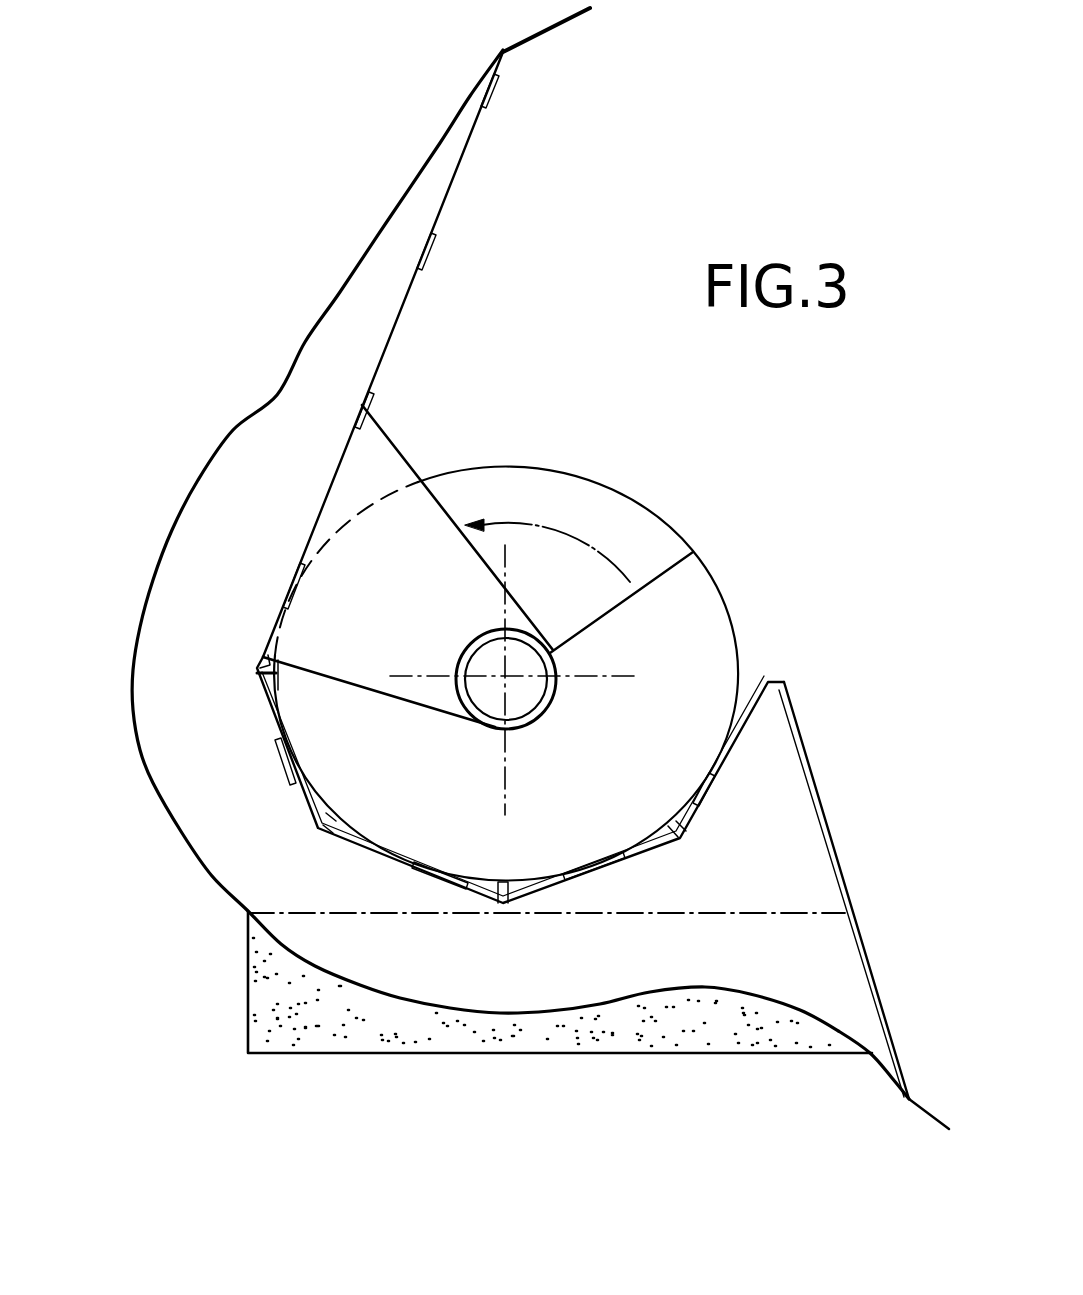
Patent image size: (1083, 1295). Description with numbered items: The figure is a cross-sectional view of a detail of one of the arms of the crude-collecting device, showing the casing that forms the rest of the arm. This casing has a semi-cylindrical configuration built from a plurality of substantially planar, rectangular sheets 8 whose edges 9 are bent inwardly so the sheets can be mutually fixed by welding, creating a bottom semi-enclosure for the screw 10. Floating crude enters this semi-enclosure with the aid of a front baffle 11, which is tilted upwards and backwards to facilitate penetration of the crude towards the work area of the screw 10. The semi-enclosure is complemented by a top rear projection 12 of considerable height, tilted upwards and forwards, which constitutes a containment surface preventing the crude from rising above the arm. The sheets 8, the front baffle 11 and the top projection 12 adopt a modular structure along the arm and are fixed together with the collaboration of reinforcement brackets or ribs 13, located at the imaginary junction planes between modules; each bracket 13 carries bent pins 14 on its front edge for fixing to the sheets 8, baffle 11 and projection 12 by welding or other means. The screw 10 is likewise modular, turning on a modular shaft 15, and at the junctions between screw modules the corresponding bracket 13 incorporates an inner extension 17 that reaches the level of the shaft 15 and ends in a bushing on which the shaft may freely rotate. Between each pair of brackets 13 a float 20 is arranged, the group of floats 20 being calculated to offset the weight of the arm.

The sheets 8 is at (705, 805).
The edges 9 is at (680, 837).
The screw 10 is at (640, 507).
The front baffle 11 is at (835, 837).
The top rear projection 12 is at (405, 305).
The reinforcement brackets 13 is at (277, 395).
The bent pins 14 is at (350, 418).
The shaft 15 is at (543, 657).
The inner extension 17 is at (450, 520).
The float 20 is at (278, 1020).